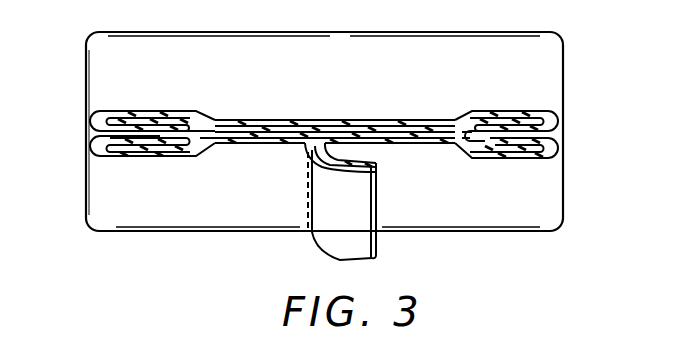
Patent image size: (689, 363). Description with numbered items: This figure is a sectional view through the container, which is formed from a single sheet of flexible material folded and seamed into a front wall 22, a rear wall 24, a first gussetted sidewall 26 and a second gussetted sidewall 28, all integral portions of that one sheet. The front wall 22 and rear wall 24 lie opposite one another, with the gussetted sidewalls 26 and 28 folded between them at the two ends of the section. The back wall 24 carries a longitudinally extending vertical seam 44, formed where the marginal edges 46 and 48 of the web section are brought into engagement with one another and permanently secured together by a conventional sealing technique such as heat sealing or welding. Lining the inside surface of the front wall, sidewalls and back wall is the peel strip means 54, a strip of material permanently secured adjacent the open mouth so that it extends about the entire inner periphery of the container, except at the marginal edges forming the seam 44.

The front wall 22 is at (342, 123).
The rear wall 24 is at (232, 143).
The first gussetted sidewall 26 is at (87, 133).
The second gussetted sidewall 28 is at (560, 135).
The seam 44 is at (333, 220).
The marginal edge 46 is at (358, 250).
The marginal edge 48 is at (380, 163).
The peel strip means 54 is at (280, 131).